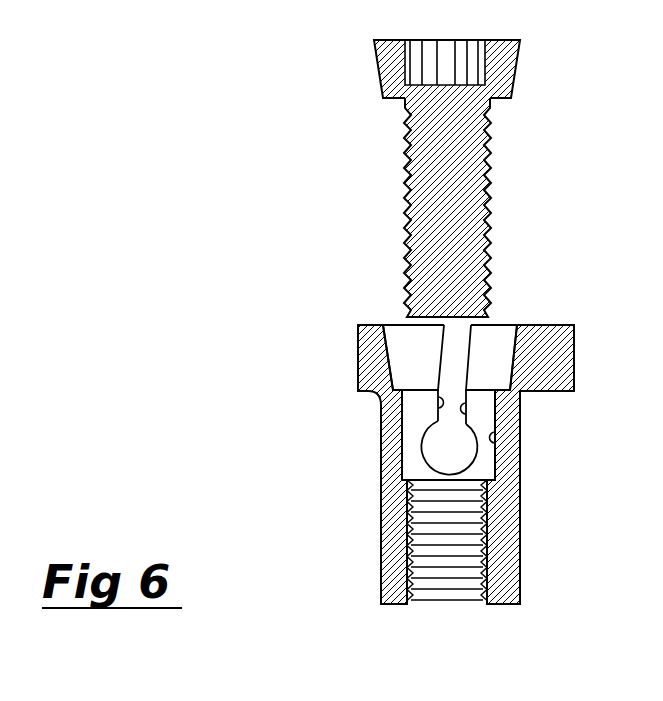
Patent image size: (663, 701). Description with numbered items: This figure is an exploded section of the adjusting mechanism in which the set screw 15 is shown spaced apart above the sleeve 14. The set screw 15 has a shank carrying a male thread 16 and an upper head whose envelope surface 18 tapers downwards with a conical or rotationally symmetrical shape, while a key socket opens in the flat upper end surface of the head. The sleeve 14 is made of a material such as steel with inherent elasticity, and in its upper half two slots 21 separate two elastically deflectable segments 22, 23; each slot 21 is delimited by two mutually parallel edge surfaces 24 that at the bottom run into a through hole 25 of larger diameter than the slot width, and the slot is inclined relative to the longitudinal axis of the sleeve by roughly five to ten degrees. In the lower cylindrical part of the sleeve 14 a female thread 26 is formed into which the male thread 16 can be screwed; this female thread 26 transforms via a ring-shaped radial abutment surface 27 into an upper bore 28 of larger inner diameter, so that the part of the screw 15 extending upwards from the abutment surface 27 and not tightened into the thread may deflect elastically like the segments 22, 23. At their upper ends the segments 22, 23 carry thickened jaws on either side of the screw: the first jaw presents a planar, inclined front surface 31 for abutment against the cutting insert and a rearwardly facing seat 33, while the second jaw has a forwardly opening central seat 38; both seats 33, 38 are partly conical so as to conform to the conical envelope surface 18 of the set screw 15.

The sleeve 14 is at (467, 454).
The set screw 15 is at (437, 178).
The male thread 16 is at (404, 183).
The envelope surface 18 is at (516, 64).
The slot 21 is at (445, 458).
The first elastically deflectable segment 22 is at (445, 433).
The second elastically deflectable segment 23 is at (521, 405).
The edge surface 24 is at (437, 402).
The through hole 25 is at (465, 453).
The female thread 26 is at (408, 587).
The abutment surface 27 is at (383, 495).
The upper bore 28 is at (497, 440).
The front surface 31 is at (358, 365).
The seat 33 is at (390, 330).
The central seat 38 is at (512, 328).